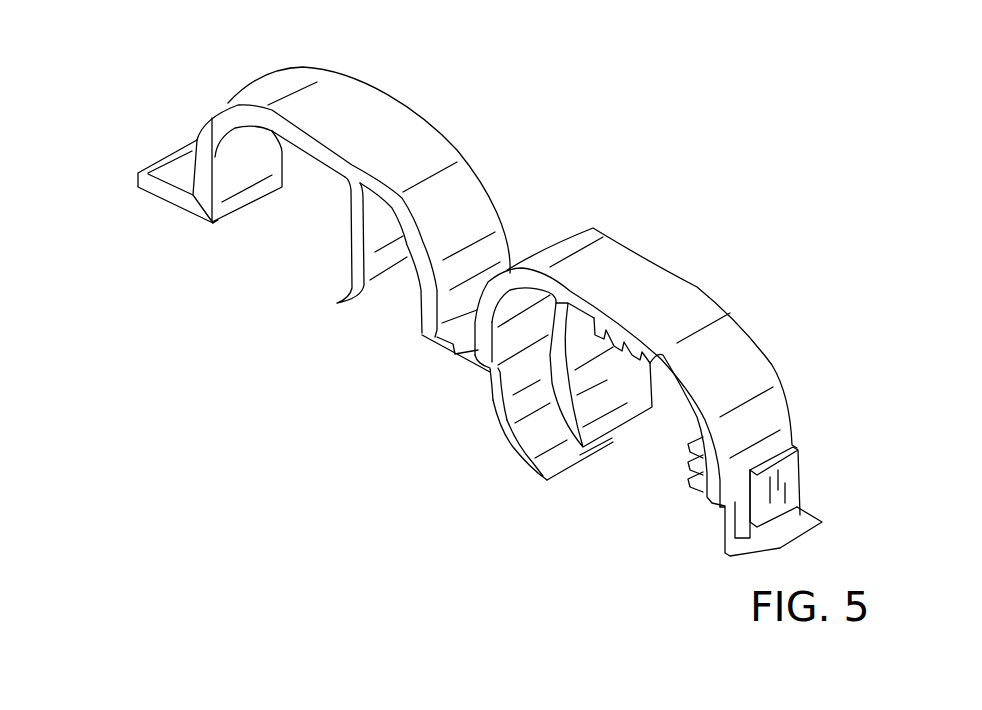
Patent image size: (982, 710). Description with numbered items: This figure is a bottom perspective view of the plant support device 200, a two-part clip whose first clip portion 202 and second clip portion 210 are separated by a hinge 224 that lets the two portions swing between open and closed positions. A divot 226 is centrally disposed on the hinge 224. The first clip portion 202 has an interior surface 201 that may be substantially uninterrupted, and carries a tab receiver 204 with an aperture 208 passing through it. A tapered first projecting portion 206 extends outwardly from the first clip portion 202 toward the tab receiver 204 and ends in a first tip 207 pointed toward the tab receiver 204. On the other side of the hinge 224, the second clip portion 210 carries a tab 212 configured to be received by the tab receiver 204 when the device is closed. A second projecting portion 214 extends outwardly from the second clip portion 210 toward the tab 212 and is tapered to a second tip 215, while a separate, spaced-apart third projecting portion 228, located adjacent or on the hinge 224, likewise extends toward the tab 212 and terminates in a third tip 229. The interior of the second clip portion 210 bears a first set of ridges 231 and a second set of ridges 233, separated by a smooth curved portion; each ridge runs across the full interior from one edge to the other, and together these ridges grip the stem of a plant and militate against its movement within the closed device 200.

The plant support device 200 is at (124, 46).
The interior surface 201 is at (243, 151).
The first clip portion 202 is at (315, 100).
The tab receiver 204 is at (150, 175).
The aperture 208 is at (185, 173).
The first projecting portion 206 is at (360, 253).
The first tip 207 is at (335, 305).
The hinge 224 is at (475, 310).
The divot 226 is at (478, 335).
The second clip portion 210 is at (680, 312).
The second tip 215 is at (627, 440).
The second set of ridges 233 is at (644, 352).
The second projecting portion 214 is at (607, 397).
The third projecting portion 228 is at (513, 450).
The third tip 229 is at (580, 460).
The first set of ridges 231 is at (697, 492).
The tab 212 is at (790, 527).